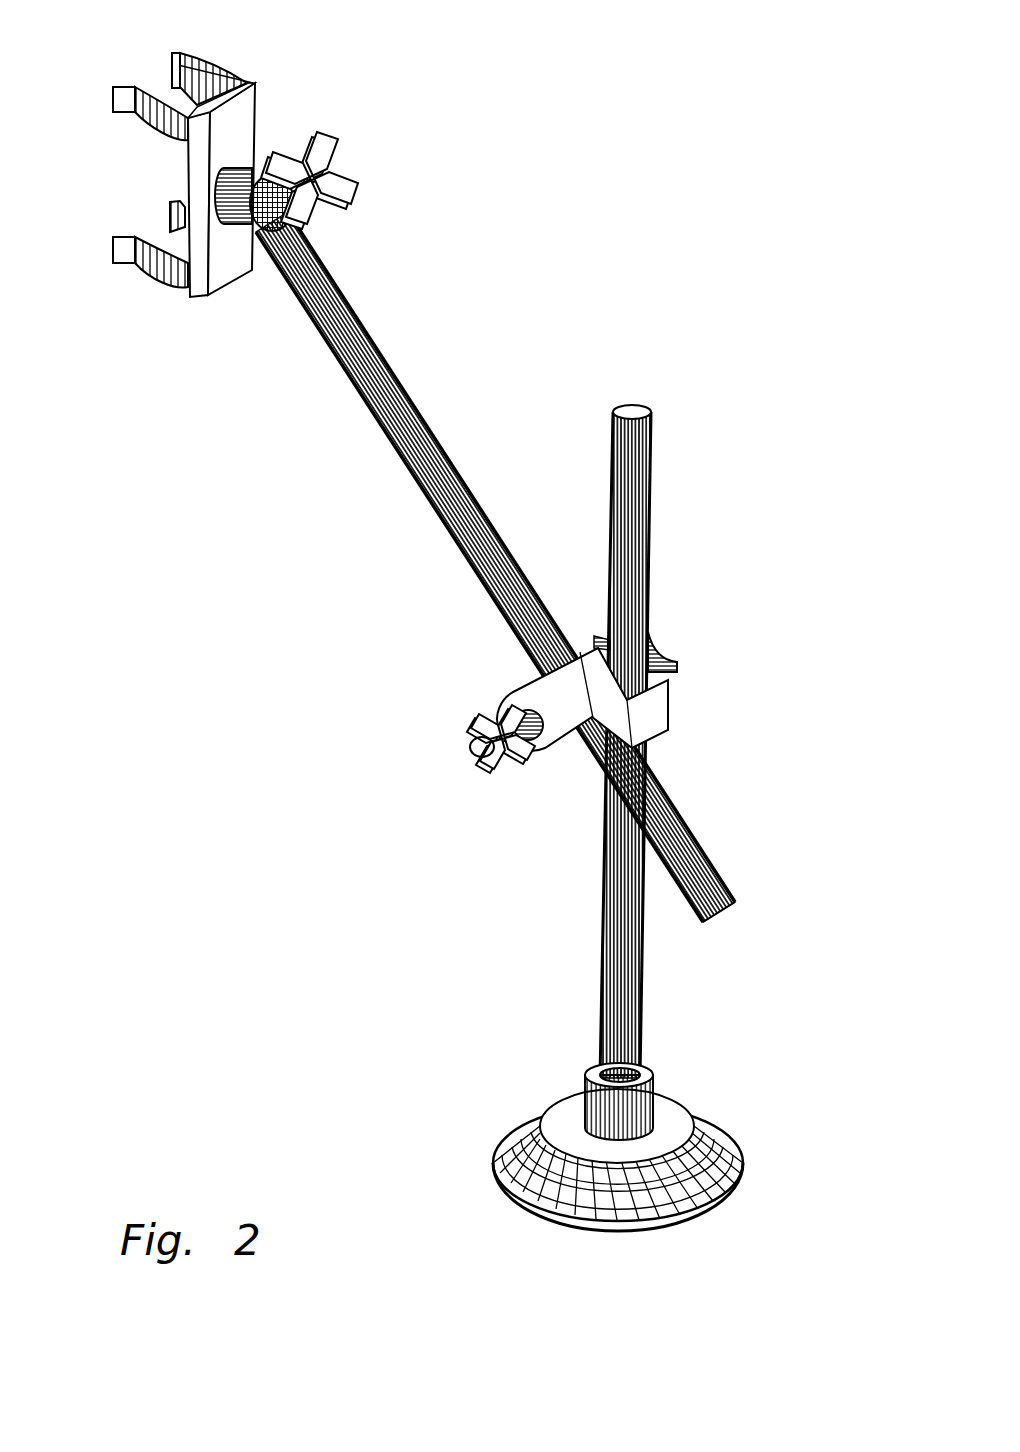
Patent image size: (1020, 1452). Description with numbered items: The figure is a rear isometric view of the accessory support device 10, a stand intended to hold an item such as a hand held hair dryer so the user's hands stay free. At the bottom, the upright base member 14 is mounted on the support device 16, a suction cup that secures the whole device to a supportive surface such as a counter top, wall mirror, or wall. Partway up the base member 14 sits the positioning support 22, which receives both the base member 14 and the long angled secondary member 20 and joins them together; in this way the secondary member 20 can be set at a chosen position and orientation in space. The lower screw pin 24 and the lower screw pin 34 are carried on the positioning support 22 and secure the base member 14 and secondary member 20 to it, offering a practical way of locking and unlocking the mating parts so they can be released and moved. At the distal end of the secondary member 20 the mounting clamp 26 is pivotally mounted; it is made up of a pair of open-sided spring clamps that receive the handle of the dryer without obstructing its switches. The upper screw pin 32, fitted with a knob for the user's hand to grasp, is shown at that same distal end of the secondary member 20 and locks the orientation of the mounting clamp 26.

The accessory support device 10 is at (519, 281).
The base member 14 is at (615, 450).
The support device 16 is at (677, 1100).
The secondary member 20 is at (393, 375).
The positioning support 22 is at (698, 739).
The lower screw pin 24 is at (481, 774).
The mounting clamp 26 is at (288, 89).
The upper screw pin 32 is at (353, 188).
The lower screw pin 34 is at (676, 664).